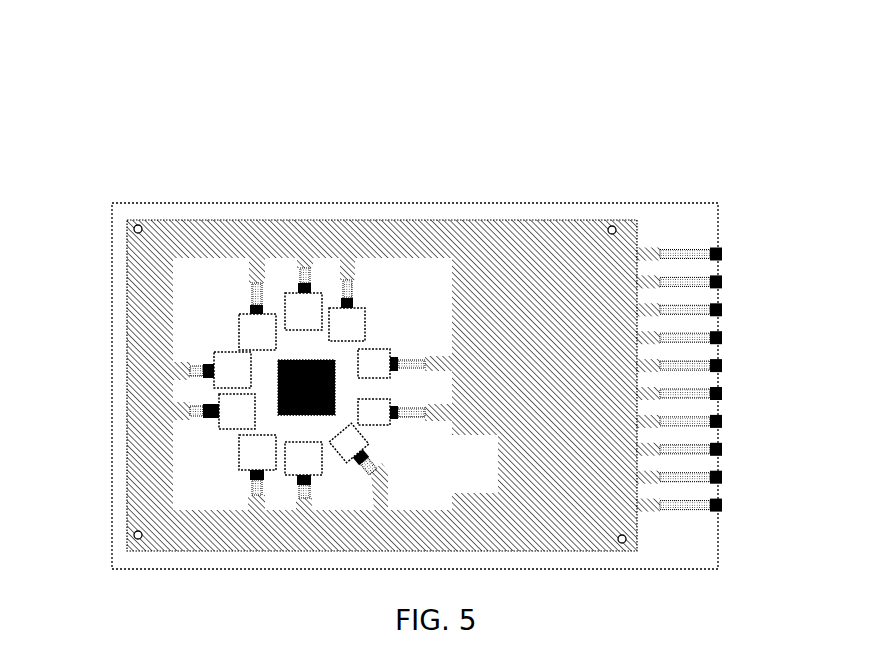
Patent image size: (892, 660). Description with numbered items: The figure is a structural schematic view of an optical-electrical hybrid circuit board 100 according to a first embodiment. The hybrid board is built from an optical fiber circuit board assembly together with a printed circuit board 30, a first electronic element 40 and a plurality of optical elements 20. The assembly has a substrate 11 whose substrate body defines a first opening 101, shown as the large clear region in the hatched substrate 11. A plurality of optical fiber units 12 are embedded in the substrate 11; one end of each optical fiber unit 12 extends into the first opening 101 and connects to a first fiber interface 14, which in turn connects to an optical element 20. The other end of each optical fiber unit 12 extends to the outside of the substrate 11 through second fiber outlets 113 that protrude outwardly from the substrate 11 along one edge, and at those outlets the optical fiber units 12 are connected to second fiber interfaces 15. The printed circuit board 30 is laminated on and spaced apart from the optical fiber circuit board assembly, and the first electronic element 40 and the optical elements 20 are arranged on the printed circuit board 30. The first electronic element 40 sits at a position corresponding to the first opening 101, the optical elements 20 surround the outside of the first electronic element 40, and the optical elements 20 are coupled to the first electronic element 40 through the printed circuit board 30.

The optical-electrical hybrid circuit board 100 is at (103, 159).
The first opening 101 is at (216, 277).
The substrate 11 is at (445, 233).
The second fiber outlet 113 is at (645, 250).
The optical fiber unit 12 is at (688, 252).
The first fiber interface 14 is at (398, 370).
The second fiber interface 15 is at (721, 259).
The optical element 20 is at (372, 357).
The printed circuit board 30 is at (400, 207).
The first electronic element 40 is at (306, 360).